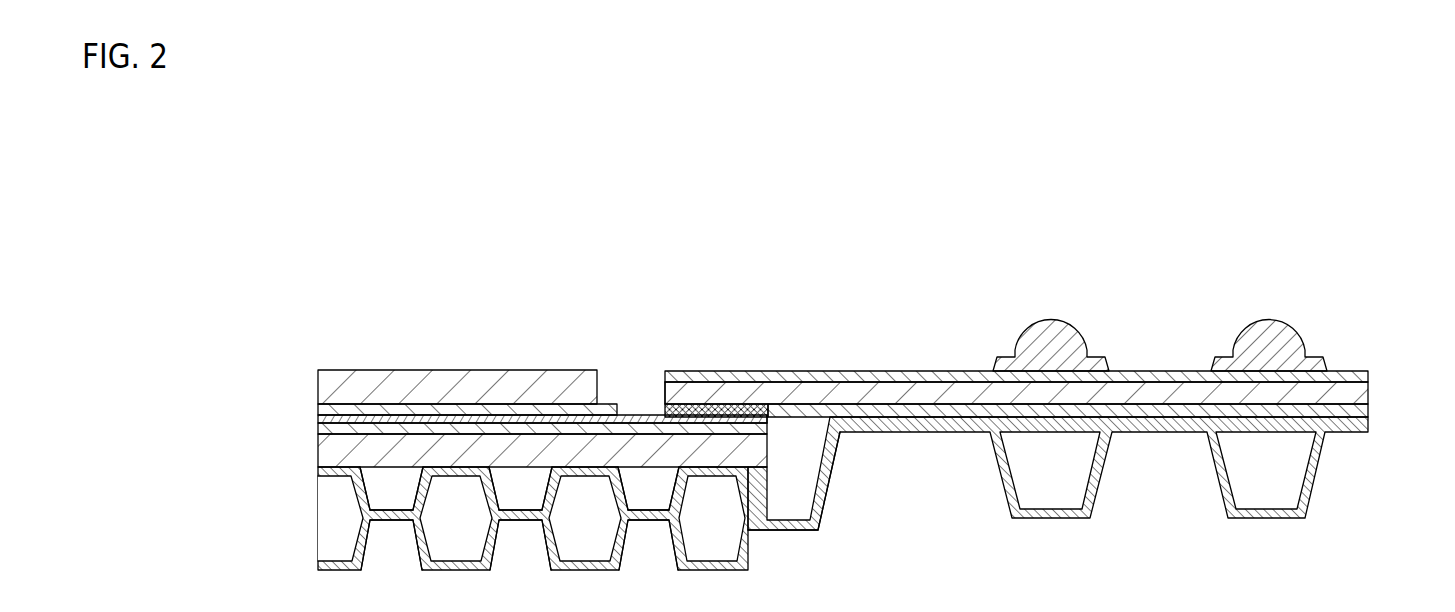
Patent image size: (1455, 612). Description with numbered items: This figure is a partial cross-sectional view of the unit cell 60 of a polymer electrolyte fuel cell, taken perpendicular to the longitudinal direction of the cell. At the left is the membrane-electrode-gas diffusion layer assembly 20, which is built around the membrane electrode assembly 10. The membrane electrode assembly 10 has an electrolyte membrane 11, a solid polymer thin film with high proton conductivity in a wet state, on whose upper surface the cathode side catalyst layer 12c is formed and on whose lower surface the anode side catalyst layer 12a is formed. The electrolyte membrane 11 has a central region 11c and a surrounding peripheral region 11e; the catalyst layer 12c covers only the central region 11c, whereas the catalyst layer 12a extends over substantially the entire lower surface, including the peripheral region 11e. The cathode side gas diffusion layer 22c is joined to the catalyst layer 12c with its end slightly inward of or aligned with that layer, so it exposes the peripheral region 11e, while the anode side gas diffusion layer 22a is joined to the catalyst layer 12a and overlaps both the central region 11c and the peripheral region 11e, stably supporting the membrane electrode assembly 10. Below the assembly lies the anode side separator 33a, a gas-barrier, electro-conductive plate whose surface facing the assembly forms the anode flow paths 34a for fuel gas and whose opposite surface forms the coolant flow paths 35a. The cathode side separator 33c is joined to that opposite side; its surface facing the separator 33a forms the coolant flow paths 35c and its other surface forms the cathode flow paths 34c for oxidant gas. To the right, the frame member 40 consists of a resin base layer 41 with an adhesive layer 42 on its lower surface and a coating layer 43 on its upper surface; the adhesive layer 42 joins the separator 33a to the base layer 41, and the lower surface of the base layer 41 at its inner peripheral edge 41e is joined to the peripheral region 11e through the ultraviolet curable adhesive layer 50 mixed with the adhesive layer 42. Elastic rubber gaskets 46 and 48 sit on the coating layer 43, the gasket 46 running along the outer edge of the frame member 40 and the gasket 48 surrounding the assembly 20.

The membrane electrode assembly 10 is at (240, 382).
The electrolyte membrane 11 is at (322, 419).
The central region 11c is at (553, 418).
The peripheral region 11e is at (728, 420).
The anode side catalyst layer 12a is at (322, 430).
The cathode side catalyst layer 12c is at (322, 409).
The membrane-electrode-gas diffusion layer assembly 20 is at (155, 370).
The anode side gas diffusion layer 22a is at (330, 457).
The cathode side gas diffusion layer 22c is at (330, 377).
The anode side separator 33a is at (817, 478).
The cathode side separator 33c is at (835, 452).
The anode flow path 34a is at (408, 499).
The cathode flow path 34c is at (408, 560).
The coolant flow path 35a is at (344, 510).
The coolant flow path 35c is at (344, 550).
The frame member 40 is at (1418, 350).
The base layer 41 is at (1360, 393).
The inner peripheral edge 41e is at (665, 392).
The adhesive layer 42 is at (1363, 410).
The coating layer 43 is at (1363, 378).
The gasket 46 is at (1270, 333).
The gasket 48 is at (1052, 333).
The adhesive layer 50 is at (737, 408).
The unit cell 60 is at (290, 320).